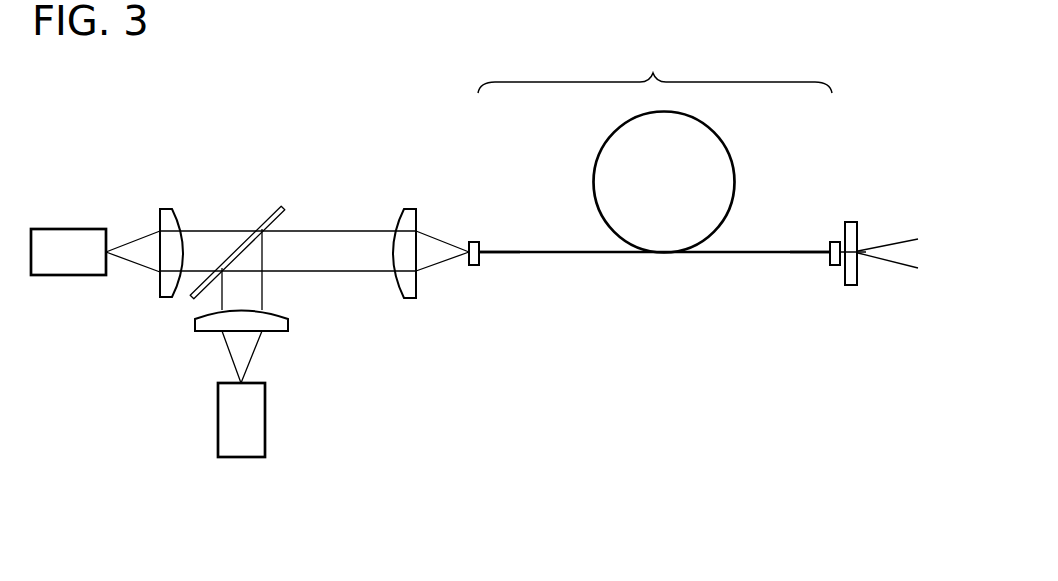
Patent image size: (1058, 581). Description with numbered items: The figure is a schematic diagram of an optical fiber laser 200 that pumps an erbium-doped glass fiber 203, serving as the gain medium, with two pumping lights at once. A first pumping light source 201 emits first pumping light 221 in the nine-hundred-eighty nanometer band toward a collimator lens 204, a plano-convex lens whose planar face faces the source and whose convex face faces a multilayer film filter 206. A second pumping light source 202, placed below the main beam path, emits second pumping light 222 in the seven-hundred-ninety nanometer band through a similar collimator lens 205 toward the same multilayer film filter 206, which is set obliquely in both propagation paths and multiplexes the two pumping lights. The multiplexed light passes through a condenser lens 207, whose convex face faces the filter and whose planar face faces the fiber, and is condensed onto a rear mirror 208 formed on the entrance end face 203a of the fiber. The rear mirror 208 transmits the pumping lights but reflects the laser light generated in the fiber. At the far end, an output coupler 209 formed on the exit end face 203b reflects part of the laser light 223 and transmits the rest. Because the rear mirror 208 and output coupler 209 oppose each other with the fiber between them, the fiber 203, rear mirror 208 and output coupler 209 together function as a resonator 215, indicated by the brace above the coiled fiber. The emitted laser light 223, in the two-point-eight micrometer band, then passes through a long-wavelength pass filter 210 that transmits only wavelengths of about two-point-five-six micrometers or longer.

The optical fiber laser 200 is at (900, 41).
The first pumping light source 201 is at (67, 229).
The second pumping light source 202 is at (265, 418).
The erbium-doped glass fiber 203 is at (732, 161).
The entrance end face 203a is at (481, 250).
The exit end face 203b is at (830, 250).
The collimator lens 204 is at (168, 209).
The collimator lens 205 is at (288, 323).
The multilayer film filter 206 is at (258, 207).
The condenser lens 207 is at (411, 209).
The rear mirror 208 is at (474, 242).
The output coupler 209 is at (835, 242).
The long-wavelength pass filter 210 is at (851, 222).
The resonator 215 is at (655, 67).
The first pumping light 221 is at (132, 240).
The second pumping light 222 is at (253, 355).
The laser light 223 is at (885, 253).